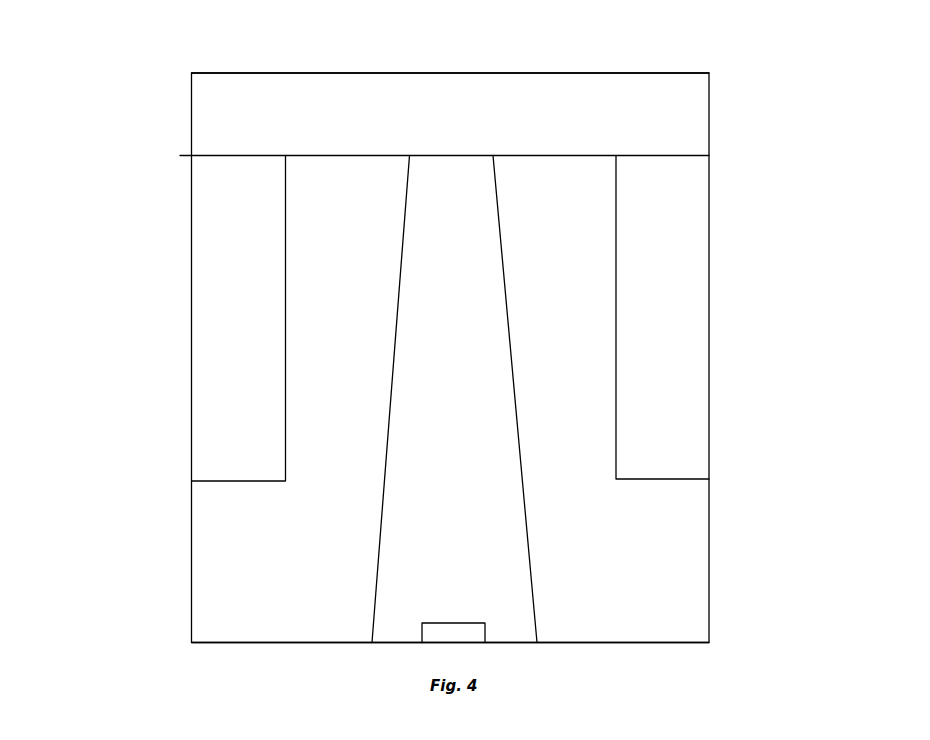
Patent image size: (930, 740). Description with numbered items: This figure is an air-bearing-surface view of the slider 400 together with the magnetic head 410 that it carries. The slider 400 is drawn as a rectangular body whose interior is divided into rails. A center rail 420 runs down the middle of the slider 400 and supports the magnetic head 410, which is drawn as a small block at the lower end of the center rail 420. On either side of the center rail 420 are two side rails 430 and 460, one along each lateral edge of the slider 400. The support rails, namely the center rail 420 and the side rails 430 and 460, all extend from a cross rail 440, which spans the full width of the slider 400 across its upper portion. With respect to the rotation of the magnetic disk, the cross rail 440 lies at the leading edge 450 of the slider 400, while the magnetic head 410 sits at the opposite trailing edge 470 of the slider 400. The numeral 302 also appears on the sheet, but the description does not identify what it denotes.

The slider 400 is at (57, 598).
The lens 302 is at (696, 10).
The magnetic head 410 is at (443, 633).
The center rail 420 is at (422, 470).
The side rail 430 is at (233, 288).
The cross rail 440 is at (232, 105).
The leading edge 450 is at (261, 73).
The side rail 460 is at (688, 305).
The trailing edge 470 is at (618, 644).